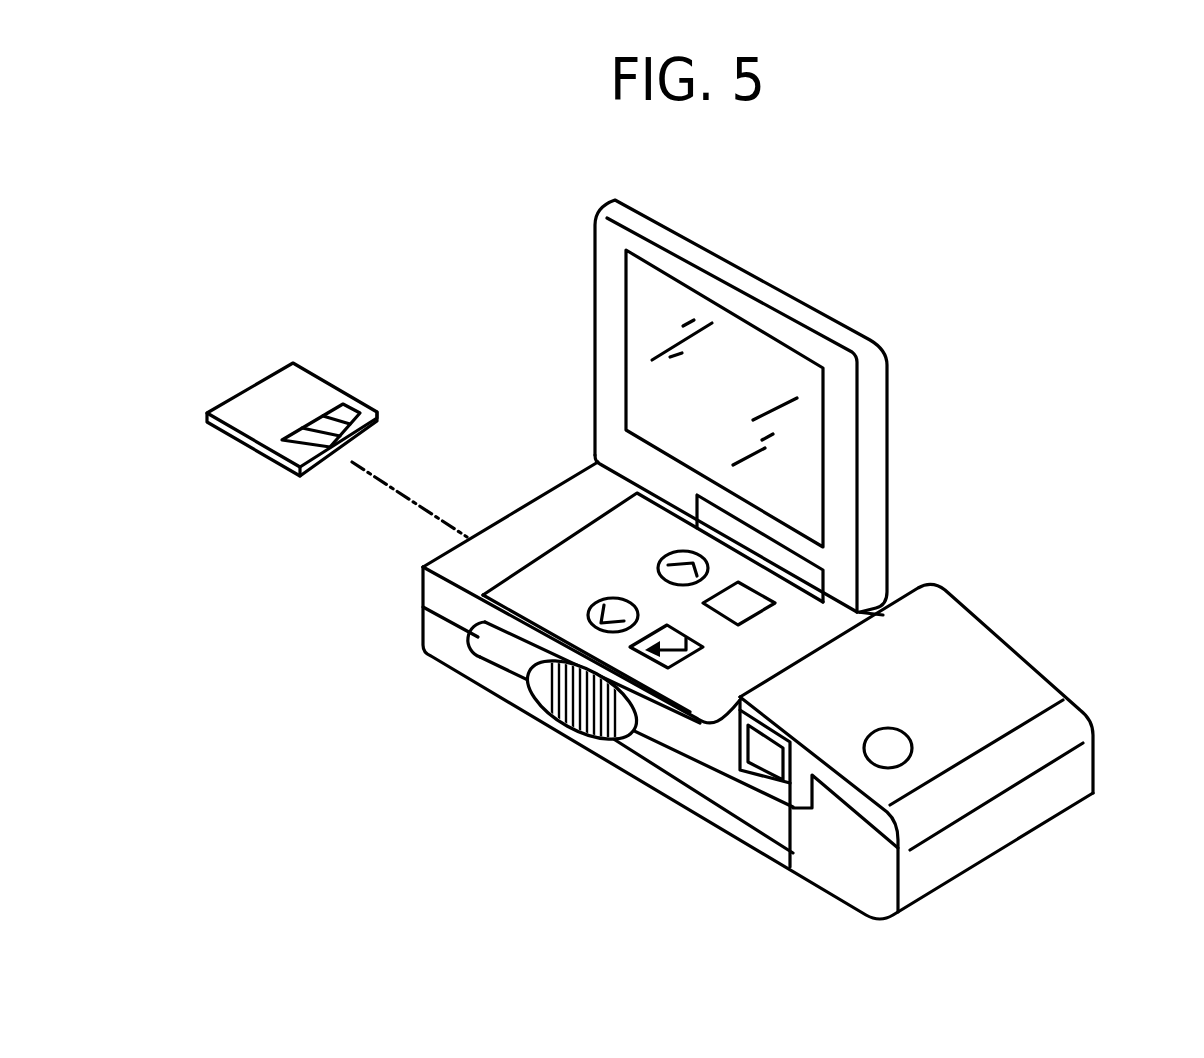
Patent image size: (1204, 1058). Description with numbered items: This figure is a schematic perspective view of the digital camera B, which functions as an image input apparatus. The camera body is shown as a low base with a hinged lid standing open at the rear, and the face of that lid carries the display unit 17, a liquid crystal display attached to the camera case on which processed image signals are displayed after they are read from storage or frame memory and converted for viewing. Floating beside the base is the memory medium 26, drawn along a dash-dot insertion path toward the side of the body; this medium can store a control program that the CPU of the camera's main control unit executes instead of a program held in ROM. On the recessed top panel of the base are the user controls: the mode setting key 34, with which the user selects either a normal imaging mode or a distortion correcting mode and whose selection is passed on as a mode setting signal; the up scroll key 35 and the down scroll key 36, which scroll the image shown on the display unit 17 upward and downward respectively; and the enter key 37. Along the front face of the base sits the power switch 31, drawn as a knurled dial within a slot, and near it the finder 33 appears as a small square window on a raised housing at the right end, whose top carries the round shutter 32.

The display unit 17 is at (740, 334).
The memory medium 26 is at (309, 383).
The power switch 31 is at (550, 697).
The shutter 32 is at (893, 742).
The finder 33 is at (775, 758).
The mode setting key 34 is at (745, 600).
The up scroll key 35 is at (680, 553).
The down scroll key 36 is at (615, 597).
The enter key 37 is at (672, 668).
The digital camera B is at (1070, 318).